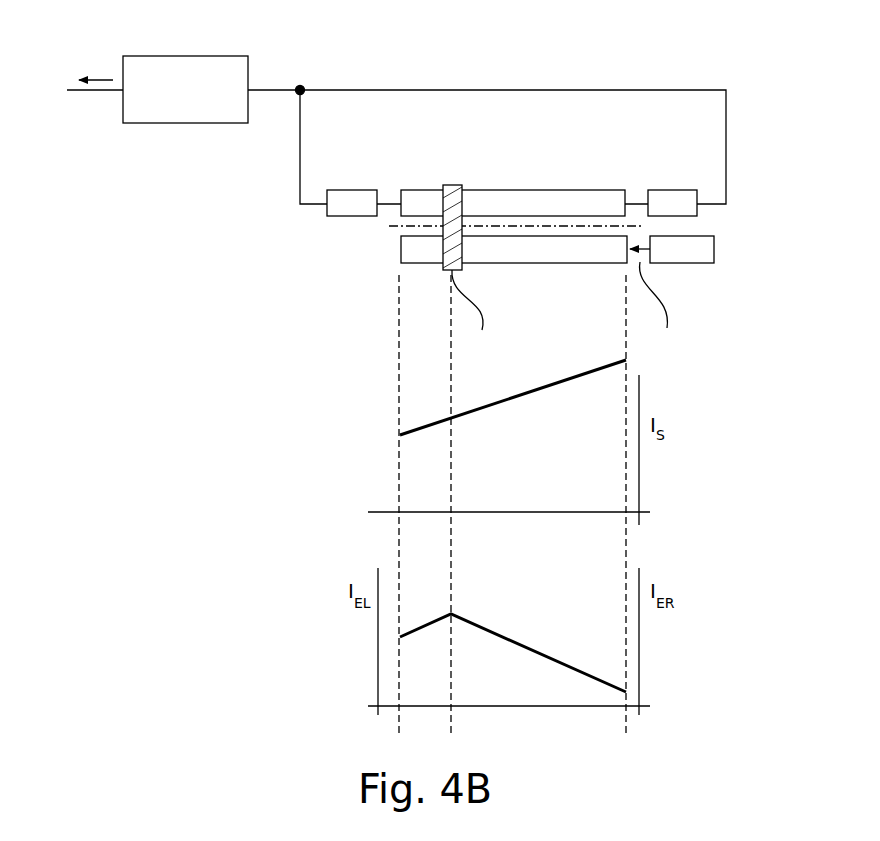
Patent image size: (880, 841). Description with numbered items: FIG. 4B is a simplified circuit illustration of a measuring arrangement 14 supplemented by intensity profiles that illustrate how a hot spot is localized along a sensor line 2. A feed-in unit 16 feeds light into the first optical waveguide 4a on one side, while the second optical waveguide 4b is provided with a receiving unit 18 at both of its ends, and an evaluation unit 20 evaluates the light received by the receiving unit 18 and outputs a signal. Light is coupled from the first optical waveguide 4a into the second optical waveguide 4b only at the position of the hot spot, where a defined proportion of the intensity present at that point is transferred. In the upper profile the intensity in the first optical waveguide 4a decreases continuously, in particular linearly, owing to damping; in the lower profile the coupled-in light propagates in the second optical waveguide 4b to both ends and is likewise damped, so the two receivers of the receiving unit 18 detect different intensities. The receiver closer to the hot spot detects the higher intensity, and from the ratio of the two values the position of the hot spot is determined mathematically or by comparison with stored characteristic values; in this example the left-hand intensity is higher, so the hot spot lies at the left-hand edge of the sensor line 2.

The sensor line 2 is at (372, 264).
The first optical waveguide 4a is at (523, 253).
The second optical waveguide 4b is at (488, 203).
The measuring arrangement 14 is at (460, 234).
The feed-in unit 16 is at (685, 252).
The receiving unit 18 is at (337, 204).
The evaluation unit 20 is at (168, 112).